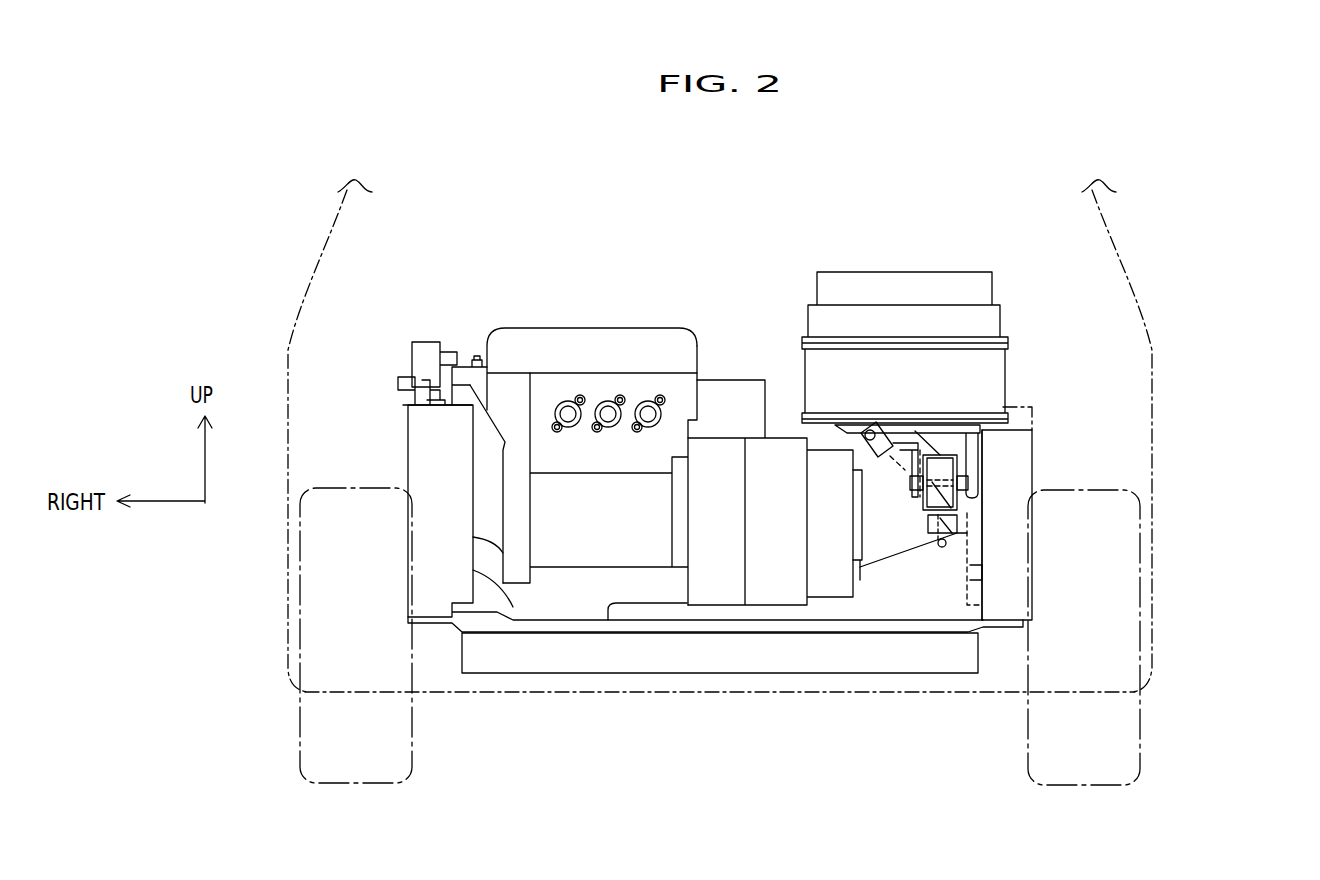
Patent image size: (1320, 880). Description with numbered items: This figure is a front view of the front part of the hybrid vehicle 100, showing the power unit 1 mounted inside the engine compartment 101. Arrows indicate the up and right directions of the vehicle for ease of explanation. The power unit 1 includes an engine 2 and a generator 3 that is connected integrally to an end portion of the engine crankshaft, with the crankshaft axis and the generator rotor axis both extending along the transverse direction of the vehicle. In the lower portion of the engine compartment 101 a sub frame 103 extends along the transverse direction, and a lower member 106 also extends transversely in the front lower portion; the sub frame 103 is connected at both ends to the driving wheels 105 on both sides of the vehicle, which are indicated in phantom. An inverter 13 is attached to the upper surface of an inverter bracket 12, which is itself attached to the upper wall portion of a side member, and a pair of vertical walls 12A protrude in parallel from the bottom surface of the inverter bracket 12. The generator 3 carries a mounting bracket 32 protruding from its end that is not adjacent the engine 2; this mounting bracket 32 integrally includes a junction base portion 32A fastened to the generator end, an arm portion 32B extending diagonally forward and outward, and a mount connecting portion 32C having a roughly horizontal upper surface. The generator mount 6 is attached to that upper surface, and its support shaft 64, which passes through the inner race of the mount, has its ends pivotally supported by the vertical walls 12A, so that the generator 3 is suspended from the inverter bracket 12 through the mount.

The power unit 1 is at (678, 276).
The engine 2 is at (591, 319).
The generator 3 is at (788, 430).
The generator mount 6 is at (967, 515).
The inverter bracket 12 is at (937, 427).
The vertical walls 12A is at (975, 458).
The inverter 13 is at (911, 263).
The mounting bracket 32 is at (908, 570).
The junction base portion 32A is at (983, 535).
The arm portion 32B is at (968, 537).
The mount connecting portion 32C is at (962, 527).
The support shaft 64 is at (858, 580).
The hybrid vehicle 100 is at (1169, 216).
The engine compartment 101 is at (494, 281).
The sub frame 103 is at (693, 655).
The driving wheels 105 is at (300, 715).
The lower member 106 is at (568, 628).